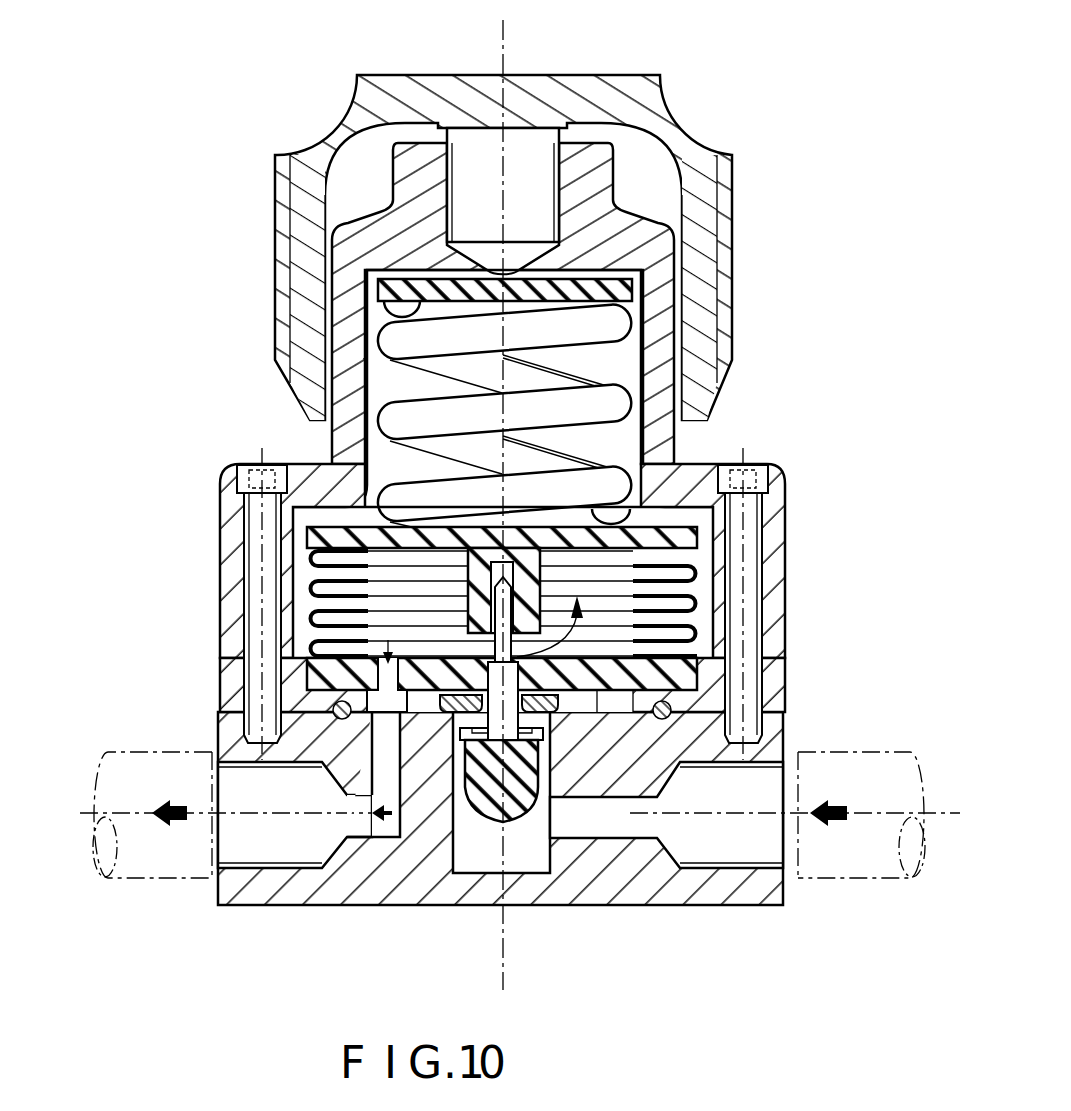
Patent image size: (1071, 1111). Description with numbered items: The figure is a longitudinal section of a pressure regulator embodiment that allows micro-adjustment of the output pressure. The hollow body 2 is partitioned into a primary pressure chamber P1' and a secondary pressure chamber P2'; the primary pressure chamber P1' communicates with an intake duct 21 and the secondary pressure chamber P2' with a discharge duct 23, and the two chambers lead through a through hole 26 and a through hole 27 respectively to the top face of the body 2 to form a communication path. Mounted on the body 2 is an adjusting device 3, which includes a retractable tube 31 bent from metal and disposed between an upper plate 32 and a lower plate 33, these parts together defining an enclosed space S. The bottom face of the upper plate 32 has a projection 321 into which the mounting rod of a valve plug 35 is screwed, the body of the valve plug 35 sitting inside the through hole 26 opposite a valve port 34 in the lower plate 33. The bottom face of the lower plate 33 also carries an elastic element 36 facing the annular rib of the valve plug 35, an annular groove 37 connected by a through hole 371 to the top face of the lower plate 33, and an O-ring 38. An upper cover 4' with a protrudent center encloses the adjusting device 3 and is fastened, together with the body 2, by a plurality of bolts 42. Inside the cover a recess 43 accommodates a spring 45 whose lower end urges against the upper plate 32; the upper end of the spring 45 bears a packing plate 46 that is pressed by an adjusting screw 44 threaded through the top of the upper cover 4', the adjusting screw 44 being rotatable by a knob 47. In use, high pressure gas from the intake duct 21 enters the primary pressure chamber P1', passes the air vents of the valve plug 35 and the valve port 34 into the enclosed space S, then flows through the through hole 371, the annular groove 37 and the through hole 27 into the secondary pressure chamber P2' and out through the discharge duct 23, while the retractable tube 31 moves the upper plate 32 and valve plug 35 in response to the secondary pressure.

The body 2 is at (611, 908).
The intake duct 21 is at (840, 864).
The discharge duct 23 is at (150, 852).
The through hole 26 is at (518, 850).
The through hole 27 is at (383, 830).
The adjusting device 3 is at (553, 559).
The retractable tube 31 is at (730, 540).
The upper plate 32 is at (680, 463).
The projection 321 is at (592, 512).
The lower plate 33 is at (720, 668).
The valve port 34 is at (700, 683).
The valve plug 35 is at (663, 760).
The elastic element 36 is at (695, 659).
The annular groove 37 is at (345, 718).
The O-ring 38 is at (700, 717).
The through hole 371 is at (380, 700).
The bolts 42 is at (262, 582).
The recess 43 is at (612, 445).
The adjusting screw 44 is at (523, 152).
The spring 45 is at (607, 405).
The packing plate 46 is at (598, 275).
The knob 47 is at (623, 98).
The upper cover 4' is at (454, 287).
The enclosed space S is at (390, 572).
The primary pressure chamber P1' is at (755, 866).
The secondary pressure chamber P2' is at (226, 862).